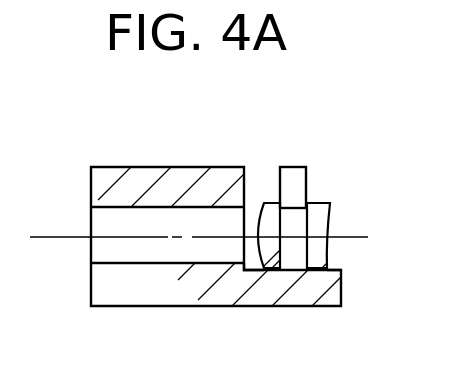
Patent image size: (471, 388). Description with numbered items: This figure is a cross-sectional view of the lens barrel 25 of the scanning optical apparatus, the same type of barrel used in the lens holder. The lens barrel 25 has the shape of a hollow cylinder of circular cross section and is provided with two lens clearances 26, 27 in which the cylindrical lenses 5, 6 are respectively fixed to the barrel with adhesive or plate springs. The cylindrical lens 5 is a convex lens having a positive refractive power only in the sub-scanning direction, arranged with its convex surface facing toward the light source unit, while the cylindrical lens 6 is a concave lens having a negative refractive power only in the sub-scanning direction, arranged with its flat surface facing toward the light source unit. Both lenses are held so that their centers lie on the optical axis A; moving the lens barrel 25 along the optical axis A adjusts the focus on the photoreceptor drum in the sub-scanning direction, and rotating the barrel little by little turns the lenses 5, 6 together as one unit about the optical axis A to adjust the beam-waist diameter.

The optical axis A is at (42, 236).
The lens barrel 25 is at (184, 177).
The cylindrical lens 5 is at (265, 203).
The cylindrical lens 6 is at (317, 203).
The lens clearance 26 is at (256, 268).
The lens clearance 27 is at (328, 268).